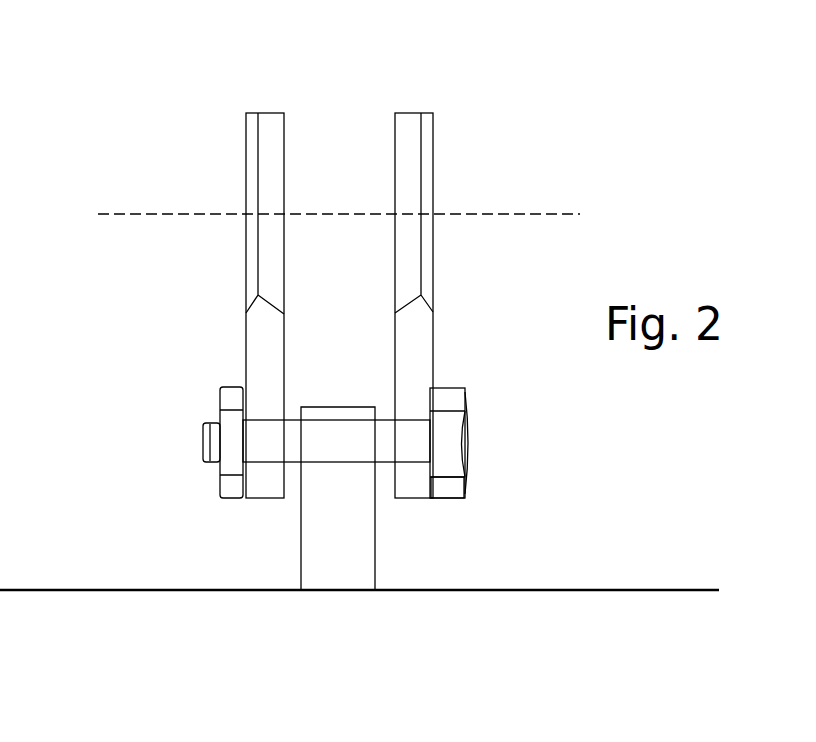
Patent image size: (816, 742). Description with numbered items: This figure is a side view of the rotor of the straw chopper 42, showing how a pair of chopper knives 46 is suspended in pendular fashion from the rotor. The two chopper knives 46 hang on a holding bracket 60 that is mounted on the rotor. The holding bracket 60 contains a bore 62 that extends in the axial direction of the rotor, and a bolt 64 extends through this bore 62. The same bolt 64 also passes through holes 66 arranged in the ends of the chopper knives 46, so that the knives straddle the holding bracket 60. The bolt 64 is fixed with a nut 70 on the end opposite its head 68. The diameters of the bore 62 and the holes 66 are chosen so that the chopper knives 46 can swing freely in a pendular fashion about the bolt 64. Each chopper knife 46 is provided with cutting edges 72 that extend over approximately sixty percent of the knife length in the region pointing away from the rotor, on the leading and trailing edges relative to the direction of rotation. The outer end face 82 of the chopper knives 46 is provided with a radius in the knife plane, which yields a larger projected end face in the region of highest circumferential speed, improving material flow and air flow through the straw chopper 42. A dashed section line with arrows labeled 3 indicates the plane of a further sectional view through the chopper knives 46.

The straw chopper 42 is at (145, 592).
The holding bracket 60 is at (355, 552).
The bore 62 is at (335, 467).
The chopper knife 46 is at (246, 344).
The cutting edge 72 is at (214, 160).
The section line 3- 3 is at (119, 195).
The outer end face 82 is at (405, 113).
The hole 66 is at (412, 419).
The bolt 64 is at (447, 436).
The head 68 is at (447, 490).
The nut 70 is at (228, 497).